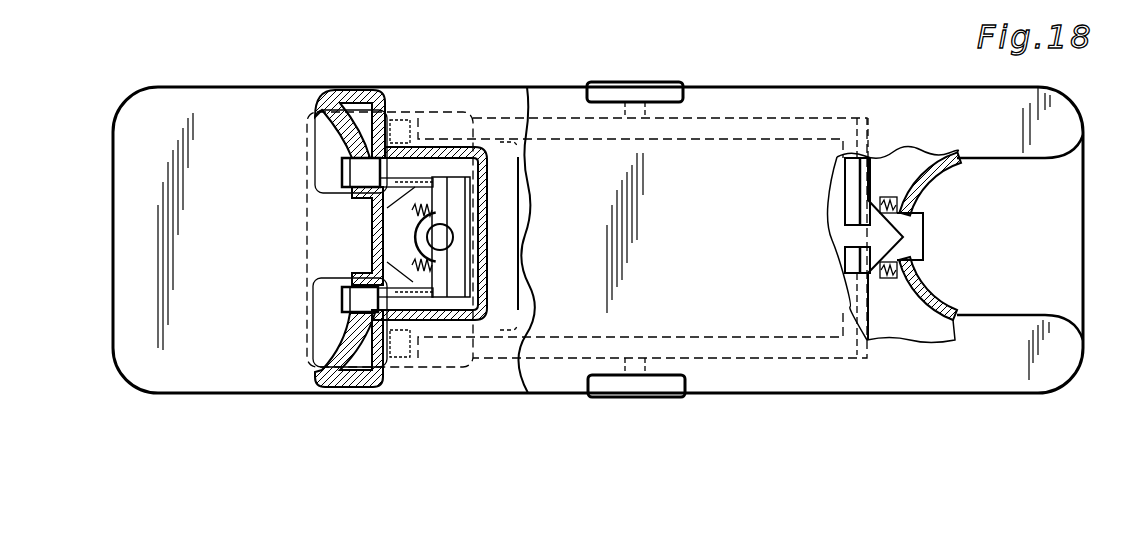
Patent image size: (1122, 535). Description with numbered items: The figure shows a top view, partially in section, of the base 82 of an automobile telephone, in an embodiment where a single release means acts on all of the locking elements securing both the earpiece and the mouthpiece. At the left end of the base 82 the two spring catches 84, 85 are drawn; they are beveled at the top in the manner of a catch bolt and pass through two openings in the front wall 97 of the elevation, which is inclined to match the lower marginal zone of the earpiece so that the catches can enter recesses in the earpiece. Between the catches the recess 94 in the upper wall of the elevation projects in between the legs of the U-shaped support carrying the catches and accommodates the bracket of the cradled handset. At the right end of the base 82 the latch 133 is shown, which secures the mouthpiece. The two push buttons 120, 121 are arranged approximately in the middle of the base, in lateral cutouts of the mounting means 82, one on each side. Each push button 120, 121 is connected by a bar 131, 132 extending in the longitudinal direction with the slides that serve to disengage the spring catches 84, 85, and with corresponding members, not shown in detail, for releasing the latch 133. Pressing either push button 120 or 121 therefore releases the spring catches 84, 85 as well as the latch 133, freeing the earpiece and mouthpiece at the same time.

The supporting means or base 82 is at (837, 377).
The spring catch 84 is at (343, 170).
The spring catch 85 is at (345, 302).
The recess 94 is at (367, 233).
The front wall 97 is at (347, 327).
The push button 120 is at (623, 90).
The push button 121 is at (663, 385).
The bar 131 is at (760, 138).
The bar 132 is at (721, 358).
The latch 133 is at (924, 238).